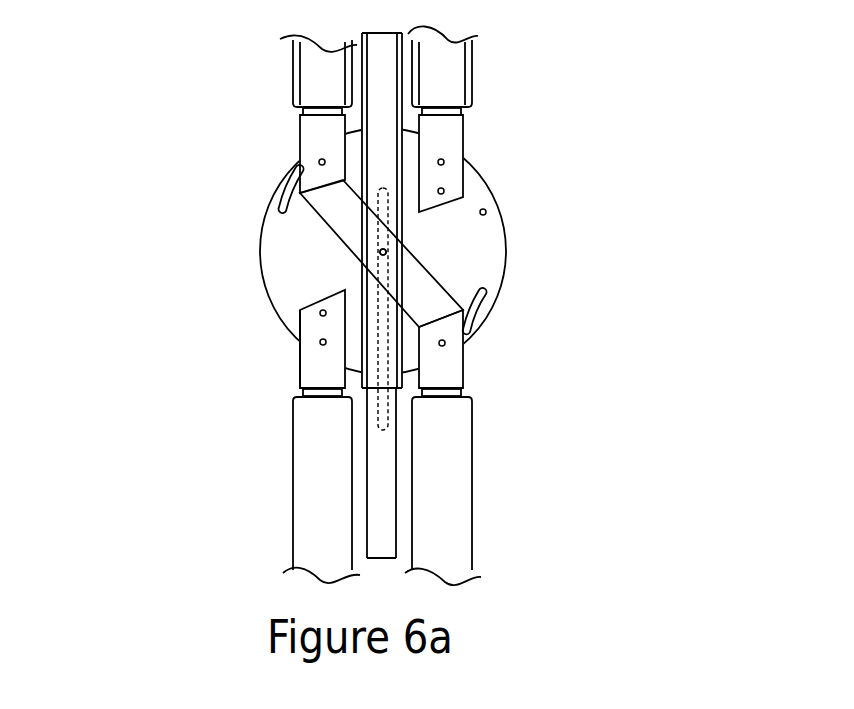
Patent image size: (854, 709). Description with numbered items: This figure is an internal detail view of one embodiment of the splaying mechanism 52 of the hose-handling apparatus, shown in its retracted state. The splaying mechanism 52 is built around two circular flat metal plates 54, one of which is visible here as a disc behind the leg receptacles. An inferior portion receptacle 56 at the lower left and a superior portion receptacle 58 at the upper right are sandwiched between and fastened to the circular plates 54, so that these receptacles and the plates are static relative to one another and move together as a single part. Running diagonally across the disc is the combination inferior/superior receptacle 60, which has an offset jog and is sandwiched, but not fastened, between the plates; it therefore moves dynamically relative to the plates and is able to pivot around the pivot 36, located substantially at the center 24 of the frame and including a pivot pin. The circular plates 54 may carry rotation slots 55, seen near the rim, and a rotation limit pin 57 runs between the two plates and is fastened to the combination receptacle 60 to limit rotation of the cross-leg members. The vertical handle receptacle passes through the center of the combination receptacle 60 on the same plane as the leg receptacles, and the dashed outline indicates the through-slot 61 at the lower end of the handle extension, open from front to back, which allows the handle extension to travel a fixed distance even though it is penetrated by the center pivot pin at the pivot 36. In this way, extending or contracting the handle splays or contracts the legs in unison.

The splaying mechanism 52 is at (399, 305).
The circular flat metal plate 54 is at (282, 263).
The center 24 is at (386, 250).
The pivot 36 is at (386, 250).
The rotation slot 55 is at (277, 202).
The inferior portion receptacle 56 is at (313, 362).
The rotation limit pin 57 is at (319, 162).
The superior portion receptacle 58 is at (452, 139).
The combination inferior/superior receptacle 60 is at (430, 284).
The through-slot 61 is at (273, 305).